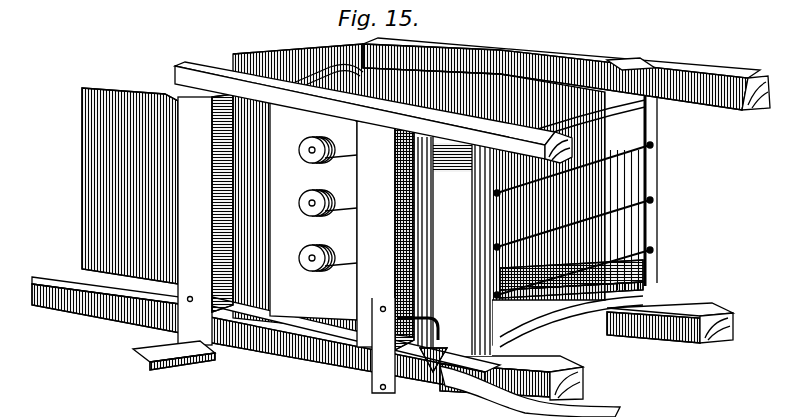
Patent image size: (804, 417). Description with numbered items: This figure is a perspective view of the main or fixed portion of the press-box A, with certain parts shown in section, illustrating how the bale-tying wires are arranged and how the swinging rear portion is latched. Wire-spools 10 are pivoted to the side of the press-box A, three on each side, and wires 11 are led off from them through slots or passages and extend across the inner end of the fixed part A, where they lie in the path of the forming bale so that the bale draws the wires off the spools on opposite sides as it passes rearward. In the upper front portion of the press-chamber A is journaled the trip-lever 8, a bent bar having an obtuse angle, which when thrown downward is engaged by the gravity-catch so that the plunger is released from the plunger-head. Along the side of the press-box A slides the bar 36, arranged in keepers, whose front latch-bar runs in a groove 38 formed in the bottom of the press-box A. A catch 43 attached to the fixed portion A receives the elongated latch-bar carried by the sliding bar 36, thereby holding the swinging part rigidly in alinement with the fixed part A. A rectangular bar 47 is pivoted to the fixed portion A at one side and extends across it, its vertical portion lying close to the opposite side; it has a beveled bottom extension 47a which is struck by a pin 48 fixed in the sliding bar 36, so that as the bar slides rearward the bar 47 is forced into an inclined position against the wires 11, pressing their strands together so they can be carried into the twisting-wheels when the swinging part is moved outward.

The trip-lever 8 is at (332, 66).
The wire-spools 10 is at (305, 166).
The wires 11 is at (353, 214).
The sliding bar 36 is at (107, 305).
The groove 38 is at (567, 310).
The catch 43 is at (417, 329).
The rectangular bar 47 is at (590, 72).
The bottom extension 47a is at (433, 372).
The pin 48 is at (318, 348).
The main or fixed portion of the press box A is at (697, 347).